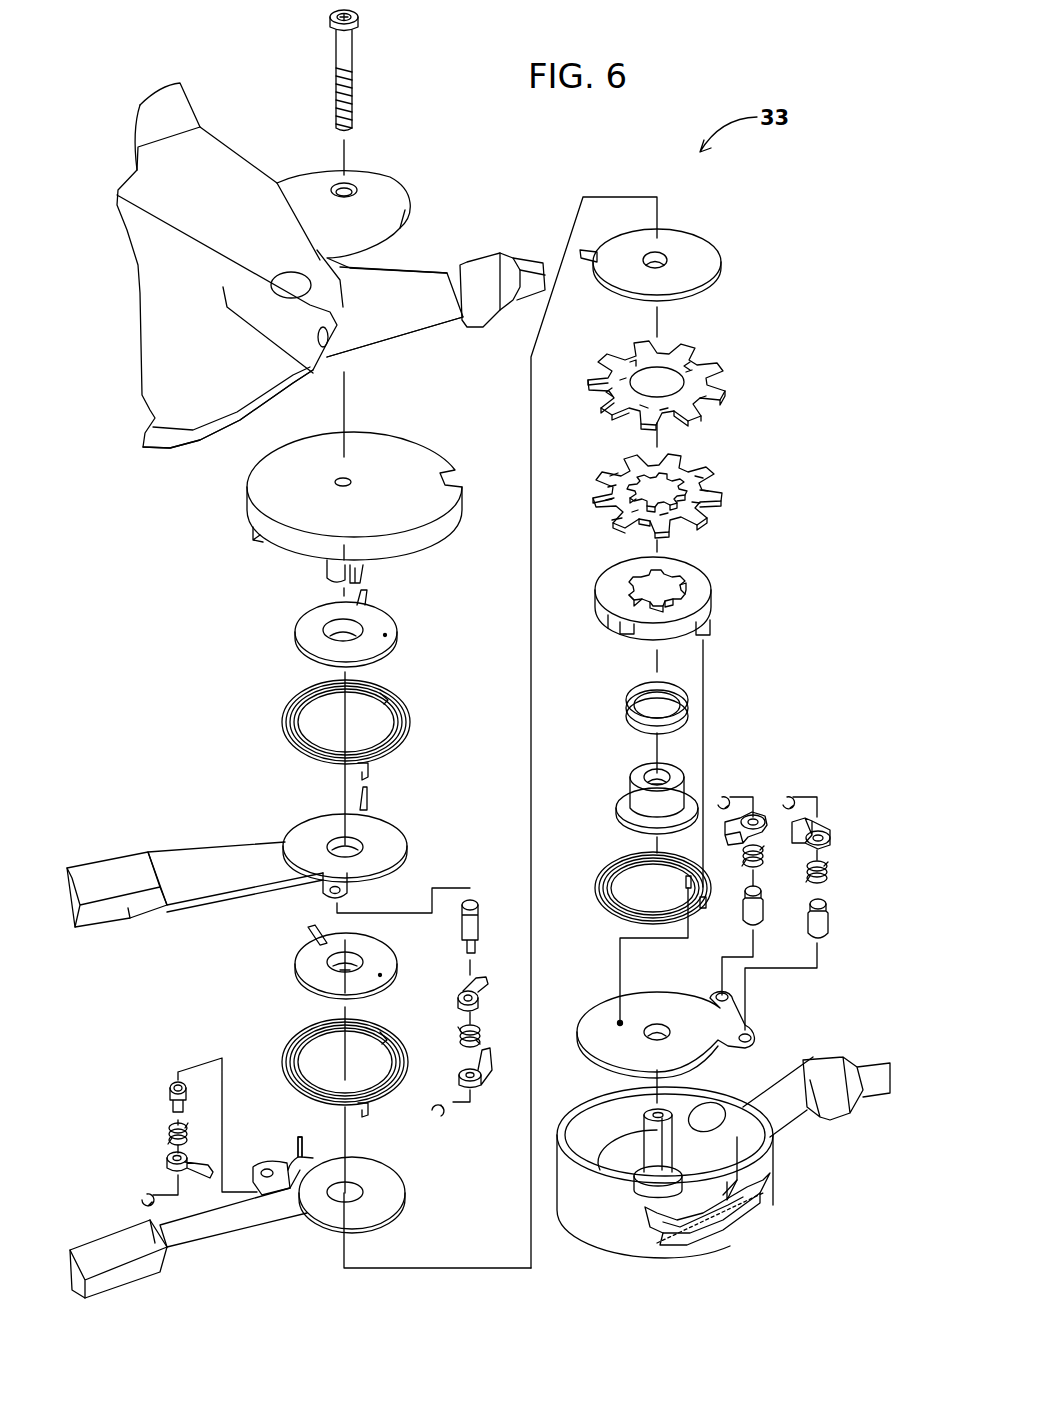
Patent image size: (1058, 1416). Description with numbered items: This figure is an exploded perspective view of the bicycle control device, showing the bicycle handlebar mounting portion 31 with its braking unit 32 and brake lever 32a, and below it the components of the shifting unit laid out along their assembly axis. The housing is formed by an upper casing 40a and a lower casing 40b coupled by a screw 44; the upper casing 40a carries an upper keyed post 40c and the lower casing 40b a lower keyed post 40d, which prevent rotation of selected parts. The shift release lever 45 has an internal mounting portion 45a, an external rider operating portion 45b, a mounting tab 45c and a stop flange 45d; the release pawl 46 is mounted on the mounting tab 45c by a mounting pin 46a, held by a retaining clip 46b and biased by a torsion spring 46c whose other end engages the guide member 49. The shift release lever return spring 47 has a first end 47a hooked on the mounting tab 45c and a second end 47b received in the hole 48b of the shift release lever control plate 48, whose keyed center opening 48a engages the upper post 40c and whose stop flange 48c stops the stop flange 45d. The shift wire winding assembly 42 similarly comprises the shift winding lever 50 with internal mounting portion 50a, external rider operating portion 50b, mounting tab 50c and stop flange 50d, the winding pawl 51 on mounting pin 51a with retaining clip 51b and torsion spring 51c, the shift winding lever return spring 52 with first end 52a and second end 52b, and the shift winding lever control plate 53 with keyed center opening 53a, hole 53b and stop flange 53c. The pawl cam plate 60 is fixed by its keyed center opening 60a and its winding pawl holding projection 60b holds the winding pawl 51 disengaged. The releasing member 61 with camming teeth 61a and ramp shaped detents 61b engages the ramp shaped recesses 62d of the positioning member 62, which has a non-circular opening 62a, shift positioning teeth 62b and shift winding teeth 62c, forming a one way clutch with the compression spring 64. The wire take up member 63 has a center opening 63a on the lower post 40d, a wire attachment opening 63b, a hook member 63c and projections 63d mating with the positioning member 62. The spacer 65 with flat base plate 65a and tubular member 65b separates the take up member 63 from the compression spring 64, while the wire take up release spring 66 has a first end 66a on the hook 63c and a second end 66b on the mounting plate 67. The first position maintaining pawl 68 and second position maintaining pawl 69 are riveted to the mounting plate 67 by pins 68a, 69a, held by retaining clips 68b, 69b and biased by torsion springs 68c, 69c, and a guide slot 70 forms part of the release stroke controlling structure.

The bicycle handlebar mounting portion 31 is at (209, 100).
The braking unit 32 is at (378, 373).
The brake lever 32a is at (167, 447).
The upper casing 40a is at (393, 465).
The lower casing 40b is at (632, 1232).
The upper keyed shaft or post 40c is at (330, 570).
The lower keyed shaft or post 40d is at (636, 1150).
The shift wire winding assembly 42 is at (133, 1088).
The screw 44 is at (355, 52).
The shift release lever 45 is at (90, 848).
The internal mounting portion 45a is at (315, 835).
The external rider operating portion 45b is at (115, 920).
The mounting tab 45c is at (325, 900).
The stop flange 45d is at (370, 795).
The release pawl 46 is at (480, 990).
The mounting pin 46a is at (470, 905).
The retaining clip 46b is at (438, 1105).
The torsion spring 46c is at (477, 1040).
The shift release lever return spring 47 is at (415, 750).
The first end 47a is at (372, 777).
The second end 47b is at (390, 700).
The shift release lever control plate 48 is at (415, 633).
The center opening 48a is at (335, 627).
The hole 48b is at (385, 635).
The stop member or flange 48c is at (368, 603).
The guide member 49 is at (495, 1100).
The shift winding lever 50 is at (90, 1233).
The internal mounting portion 50a is at (380, 1190).
The external rider operating portion 50b is at (125, 1273).
The mounting tab 50c is at (258, 1167).
The stop flange 50d is at (296, 1137).
The winding pawl 51 is at (170, 1158).
The mounting pin 51a is at (172, 1092).
The retaining clip 51b is at (143, 1200).
The torsion spring 51c is at (168, 1132).
The shift winding lever return spring 52 is at (280, 1053).
The first end 52a is at (370, 1112).
The second end 52b is at (385, 1040).
The shift winding lever control plate 53 is at (282, 963).
The center opening 53a is at (330, 978).
The hole 53b is at (380, 975).
The stop member or flange 53c is at (322, 935).
The pawl cam plate 60 is at (735, 262).
The center opening 60a is at (668, 262).
The winding pawl holding projection 60b is at (583, 262).
The releasing member or plate 61 is at (706, 428).
The camming teeth 61a is at (715, 393).
The ramp shaped detents 61b is at (690, 358).
The positioning (ratchet) member or plate 62 is at (726, 528).
The non-circular opening 62a is at (622, 470).
The shift positioning teeth 62b is at (718, 485).
The shift winding teeth 62c is at (615, 528).
The ramp shaped recesses 62d is at (692, 470).
The wire take up member 63 is at (724, 585).
The center opening 63a is at (637, 590).
The wire attachment opening 63b is at (625, 618).
The hook member 63c is at (708, 623).
The projections 63d is at (680, 583).
The compression spring 64 is at (620, 681).
The spacer 65 is at (606, 792).
The flat base plate 65a is at (620, 810).
The tubular member 65b is at (645, 768).
The wire take up release spring 66 is at (586, 881).
The first end 66a is at (612, 912).
The second end 66b is at (684, 880).
The mounting plate 67 is at (574, 1058).
The first position maintaining pawl 68 is at (748, 815).
The pin 68a is at (745, 895).
The retaining clip 68b is at (722, 798).
The torsion spring 68c is at (760, 857).
The second position maintaining pawl 69 is at (820, 835).
The pin 69a is at (830, 930).
The retaining clip 69b is at (787, 798).
The torsion spring 69c is at (835, 873).
The guide slot 70 is at (752, 1225).